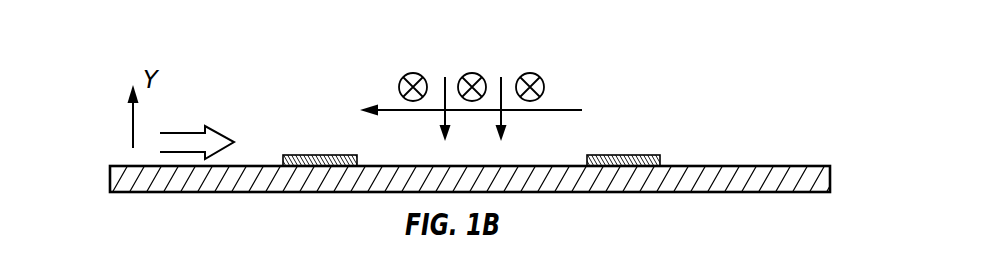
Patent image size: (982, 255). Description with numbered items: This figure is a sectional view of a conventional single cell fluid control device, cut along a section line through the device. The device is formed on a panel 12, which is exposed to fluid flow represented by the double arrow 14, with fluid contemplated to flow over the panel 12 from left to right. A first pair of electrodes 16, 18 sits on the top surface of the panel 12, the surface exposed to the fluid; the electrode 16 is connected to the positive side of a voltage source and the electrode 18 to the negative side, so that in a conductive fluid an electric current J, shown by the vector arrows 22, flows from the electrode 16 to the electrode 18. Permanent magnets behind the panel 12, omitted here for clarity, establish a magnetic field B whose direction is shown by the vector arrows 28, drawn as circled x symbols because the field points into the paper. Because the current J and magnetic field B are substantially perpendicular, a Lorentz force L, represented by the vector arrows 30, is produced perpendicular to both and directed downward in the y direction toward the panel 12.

The panel 12 is at (808, 178).
The double arrow 14 is at (183, 130).
The electrode 16 is at (638, 154).
The electrode 18 is at (305, 155).
The vector arrows 22 is at (400, 108).
The vector arrows 28 is at (539, 74).
The vector arrows 30 is at (501, 80).